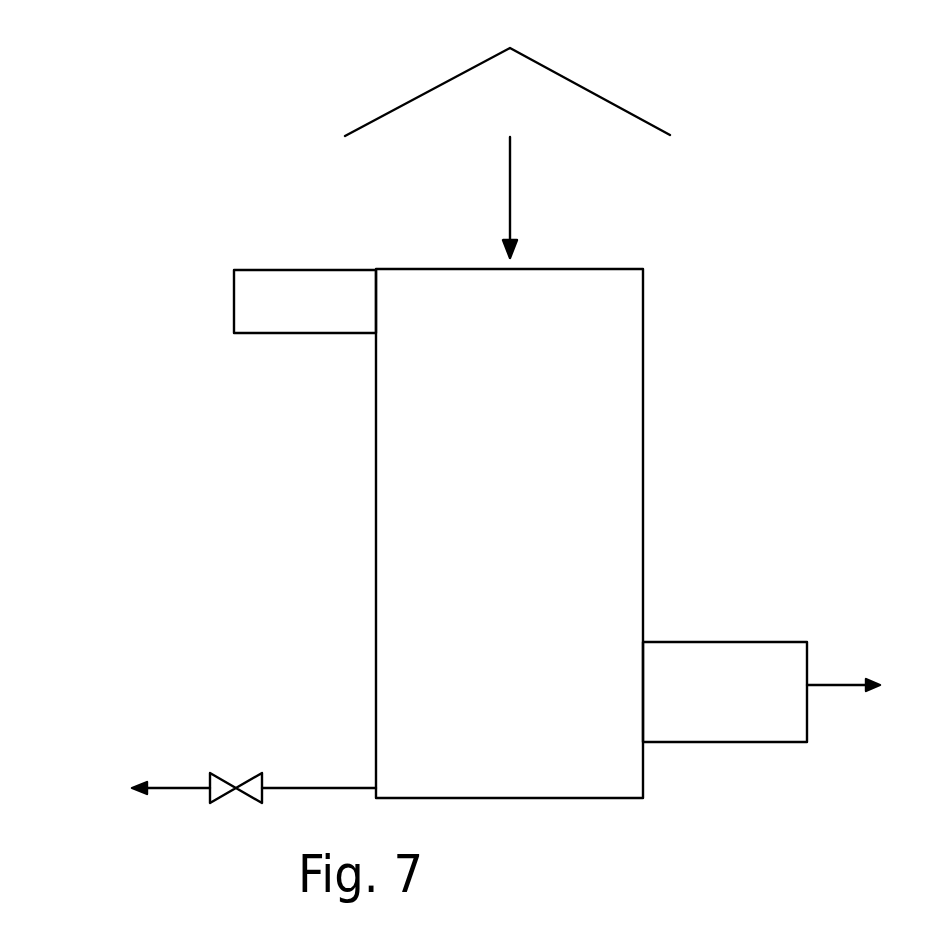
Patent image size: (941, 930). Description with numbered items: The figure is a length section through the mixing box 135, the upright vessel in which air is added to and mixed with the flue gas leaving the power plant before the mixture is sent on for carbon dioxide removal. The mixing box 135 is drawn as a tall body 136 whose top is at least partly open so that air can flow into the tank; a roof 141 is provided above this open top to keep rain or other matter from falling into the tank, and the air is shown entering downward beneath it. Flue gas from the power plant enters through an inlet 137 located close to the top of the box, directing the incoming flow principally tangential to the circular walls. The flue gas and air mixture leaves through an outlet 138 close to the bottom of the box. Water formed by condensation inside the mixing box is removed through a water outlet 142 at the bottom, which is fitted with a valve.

The mixing box 135 is at (258, 520).
The reaction vessel 136 is at (509, 467).
The inlet 137 is at (305, 301).
The outlet 138 is at (761, 692).
The roof 141 is at (608, 102).
The water outlet 142 is at (168, 788).